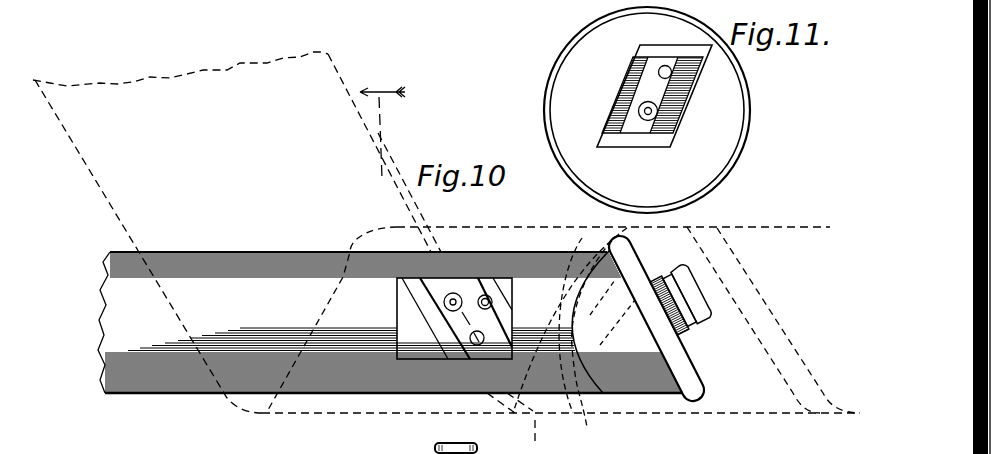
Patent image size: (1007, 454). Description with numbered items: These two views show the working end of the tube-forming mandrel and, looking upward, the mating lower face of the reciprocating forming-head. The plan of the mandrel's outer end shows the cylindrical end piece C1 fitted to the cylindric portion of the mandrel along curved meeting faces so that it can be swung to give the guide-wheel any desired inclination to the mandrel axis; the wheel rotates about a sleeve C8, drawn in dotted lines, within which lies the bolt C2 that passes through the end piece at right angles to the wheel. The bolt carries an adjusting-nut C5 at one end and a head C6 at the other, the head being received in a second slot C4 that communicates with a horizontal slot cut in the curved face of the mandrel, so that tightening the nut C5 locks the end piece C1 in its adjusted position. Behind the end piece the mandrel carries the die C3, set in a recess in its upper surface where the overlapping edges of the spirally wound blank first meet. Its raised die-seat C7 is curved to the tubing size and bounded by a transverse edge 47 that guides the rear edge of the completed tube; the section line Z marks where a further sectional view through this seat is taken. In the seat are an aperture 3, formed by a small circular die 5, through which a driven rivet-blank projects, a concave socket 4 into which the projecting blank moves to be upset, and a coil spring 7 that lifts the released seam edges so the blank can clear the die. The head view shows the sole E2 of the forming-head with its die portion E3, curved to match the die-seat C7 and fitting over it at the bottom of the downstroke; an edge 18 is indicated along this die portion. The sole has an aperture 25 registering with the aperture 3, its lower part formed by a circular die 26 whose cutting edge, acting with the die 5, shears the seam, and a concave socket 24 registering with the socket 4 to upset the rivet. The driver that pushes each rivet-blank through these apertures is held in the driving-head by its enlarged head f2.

In FIG. 10, the section line z z Z is at (382, 125).
In FIG. 10, the aperture 3 is at (456, 296).
In FIG. 10, the concave socket 4 is at (484, 333).
In FIG. 10, the circular die 5 is at (444, 302).
In FIG. 10, the spring 7 is at (491, 299).
In FIG. 10, the transverse edge 47 is at (446, 322).
In FIG. 10, the cylindrical end piece C1 is at (641, 395).
In FIG. 10, the bolt C2 is at (672, 409).
In FIG. 10, the die C3 is at (583, 250).
In FIG. 10, the second slot C4 is at (547, 250).
In FIG. 10, the adjusting-nut C5 is at (684, 303).
In FIG. 10, the bolt head C6 is at (583, 400).
In FIG. 10, the die-seat C7 is at (460, 333).
In FIG. 10, the sleeve C8 is at (641, 300).
In FIG. 10, the enlarged head of driver f2 is at (477, 446).
In FIG. 11, the bushing 18 is at (657, 108).
In FIG. 11, the concave socket 24 is at (668, 66).
In FIG. 11, the aperture 25 is at (638, 110).
In FIG. 11, the circular die 26 is at (645, 120).
In FIG. 11, the sole E2 is at (712, 148).
In FIG. 11, the die portion E3 is at (675, 97).